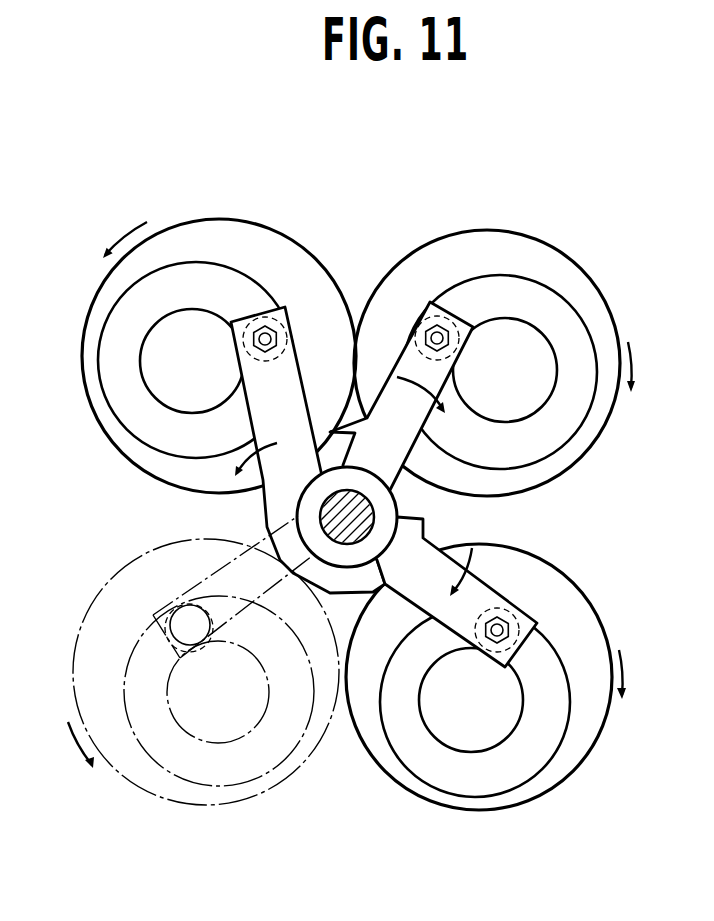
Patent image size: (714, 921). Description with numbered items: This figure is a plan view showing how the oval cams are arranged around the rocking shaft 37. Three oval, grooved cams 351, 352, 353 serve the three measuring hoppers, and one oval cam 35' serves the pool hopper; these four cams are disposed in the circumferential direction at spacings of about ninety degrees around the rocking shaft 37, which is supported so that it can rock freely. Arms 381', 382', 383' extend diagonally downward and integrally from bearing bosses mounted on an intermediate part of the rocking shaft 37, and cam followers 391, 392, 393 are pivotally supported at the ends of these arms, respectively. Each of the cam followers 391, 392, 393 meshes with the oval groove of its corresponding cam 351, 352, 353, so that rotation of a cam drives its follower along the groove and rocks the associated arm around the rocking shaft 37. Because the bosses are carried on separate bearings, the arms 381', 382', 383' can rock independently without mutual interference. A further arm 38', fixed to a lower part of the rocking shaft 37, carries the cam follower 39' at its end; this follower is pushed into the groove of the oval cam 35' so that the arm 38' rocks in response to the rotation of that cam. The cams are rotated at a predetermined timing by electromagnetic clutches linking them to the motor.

The oval grooved cam 351 is at (290, 245).
The oval grooved cam 352 is at (463, 228).
The oval grooved cam 353 is at (568, 775).
The oval cam 35' is at (206, 711).
The rocking shaft 37 is at (375, 537).
The arm 381' is at (203, 450).
The arm 382' is at (401, 334).
The arm 383' is at (512, 592).
The arm 38' is at (167, 587).
The cam follower 391 is at (250, 328).
The cam follower 392 is at (473, 325).
The cam follower 393 is at (505, 668).
The cam follower 39' is at (117, 628).